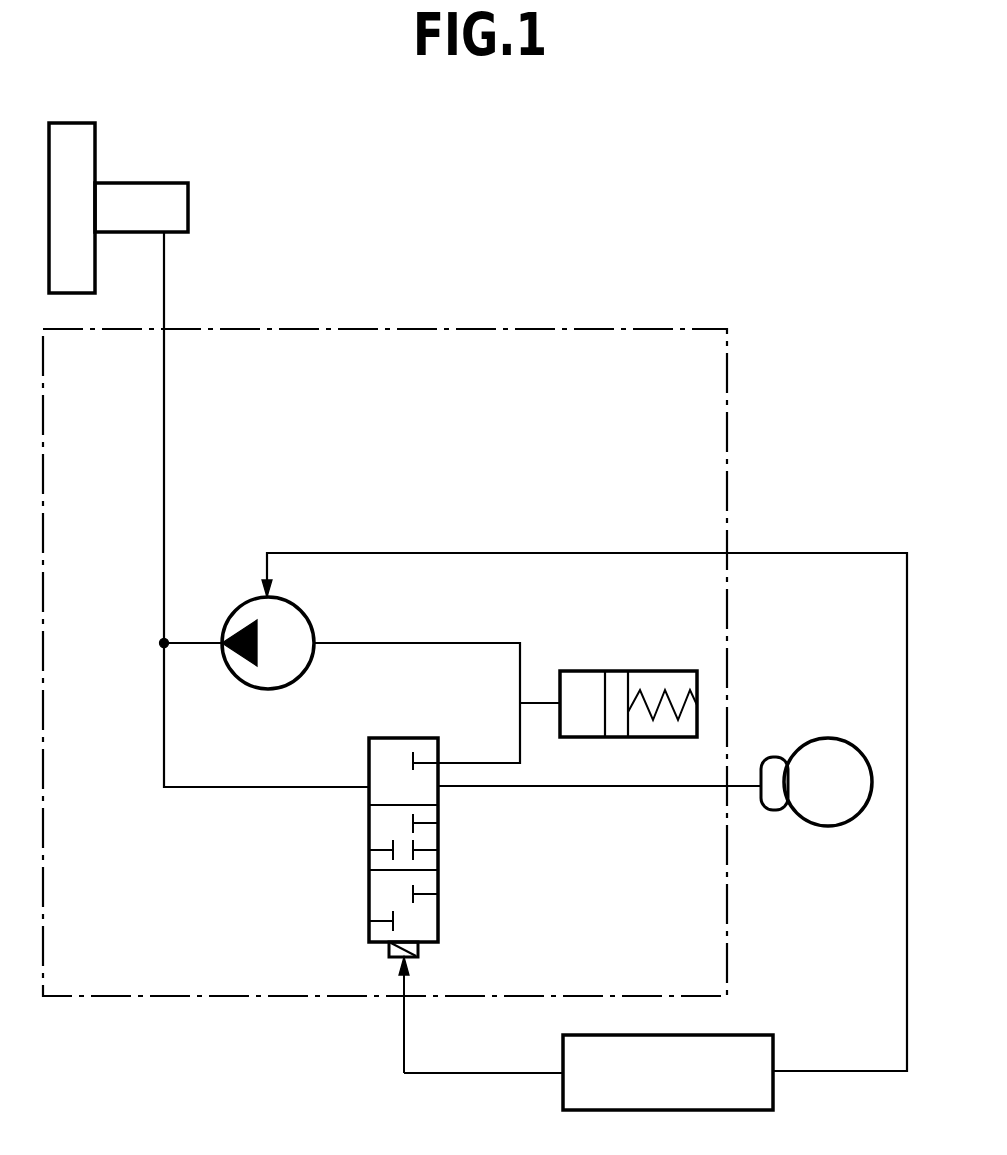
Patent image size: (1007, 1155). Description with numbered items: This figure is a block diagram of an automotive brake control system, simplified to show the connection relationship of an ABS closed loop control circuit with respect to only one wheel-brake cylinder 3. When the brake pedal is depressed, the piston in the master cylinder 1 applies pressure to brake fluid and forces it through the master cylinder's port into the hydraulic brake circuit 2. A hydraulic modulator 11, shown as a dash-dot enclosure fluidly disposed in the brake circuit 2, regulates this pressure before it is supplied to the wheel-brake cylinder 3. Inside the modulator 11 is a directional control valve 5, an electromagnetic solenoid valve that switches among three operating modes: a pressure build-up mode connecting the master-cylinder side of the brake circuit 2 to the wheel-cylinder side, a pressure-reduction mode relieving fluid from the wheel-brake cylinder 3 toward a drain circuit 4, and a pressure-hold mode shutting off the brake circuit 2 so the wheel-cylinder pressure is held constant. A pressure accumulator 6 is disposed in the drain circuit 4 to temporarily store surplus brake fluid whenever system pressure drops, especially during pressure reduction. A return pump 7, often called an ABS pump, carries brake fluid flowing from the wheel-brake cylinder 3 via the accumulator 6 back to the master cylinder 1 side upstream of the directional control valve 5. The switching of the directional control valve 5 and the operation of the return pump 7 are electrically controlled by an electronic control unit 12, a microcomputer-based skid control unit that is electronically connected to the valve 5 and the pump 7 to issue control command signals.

The master cylinder 1 is at (137, 186).
The hydraulic brake circuit 2 is at (166, 283).
The wheel-brake cylinder 3 is at (780, 757).
The drain circuit 4 is at (520, 722).
The directional control valve 5 is at (369, 893).
The pressure accumulator 6 is at (638, 671).
The return pump 7 is at (257, 690).
The hydraulic modulator 11 is at (545, 328).
The electronic control unit 12 is at (737, 1035).